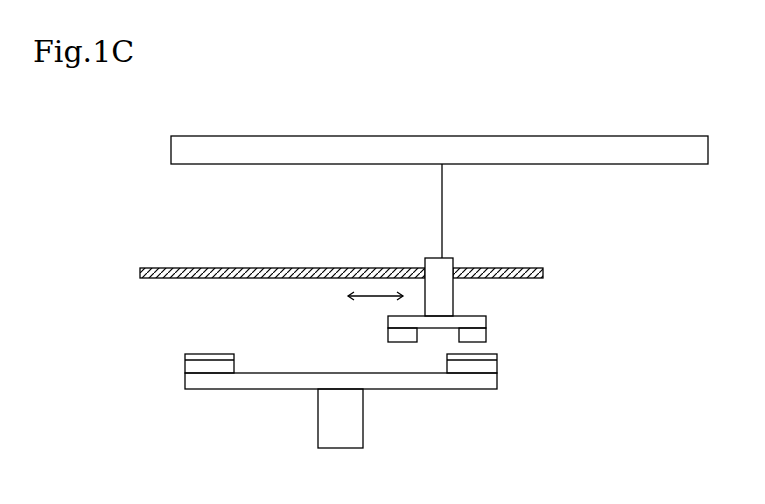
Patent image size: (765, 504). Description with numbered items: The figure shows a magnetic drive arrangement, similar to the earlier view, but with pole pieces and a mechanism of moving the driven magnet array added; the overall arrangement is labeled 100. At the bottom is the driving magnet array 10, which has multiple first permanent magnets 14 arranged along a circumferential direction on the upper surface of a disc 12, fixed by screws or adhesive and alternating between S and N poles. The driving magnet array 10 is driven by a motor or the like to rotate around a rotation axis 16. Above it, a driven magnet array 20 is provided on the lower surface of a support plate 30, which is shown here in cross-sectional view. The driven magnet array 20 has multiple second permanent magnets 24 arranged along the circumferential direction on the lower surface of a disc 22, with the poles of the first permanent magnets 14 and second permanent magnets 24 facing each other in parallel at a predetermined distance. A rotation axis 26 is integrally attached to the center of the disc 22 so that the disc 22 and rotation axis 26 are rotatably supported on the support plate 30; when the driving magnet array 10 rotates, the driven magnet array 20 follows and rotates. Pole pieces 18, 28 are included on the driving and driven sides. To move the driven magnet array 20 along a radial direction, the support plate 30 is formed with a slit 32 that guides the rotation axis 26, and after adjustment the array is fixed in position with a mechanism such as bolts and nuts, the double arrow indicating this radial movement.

The magnet driving apparatus 100 is at (538, 247).
The driving magnet array 10 is at (184, 391).
The disc 12 is at (422, 391).
The first permanent magnets 14 is at (483, 365).
The rotation axis 16 is at (325, 408).
The pole piece 18 is at (447, 358).
The driven magnet array 20 is at (558, 308).
The disc 22 is at (486, 318).
The second permanent magnets 24 is at (480, 330).
The rotation axis 26 is at (446, 306).
The pole piece 28 is at (389, 338).
The support plate 30 is at (196, 268).
The slit 32 is at (466, 266).